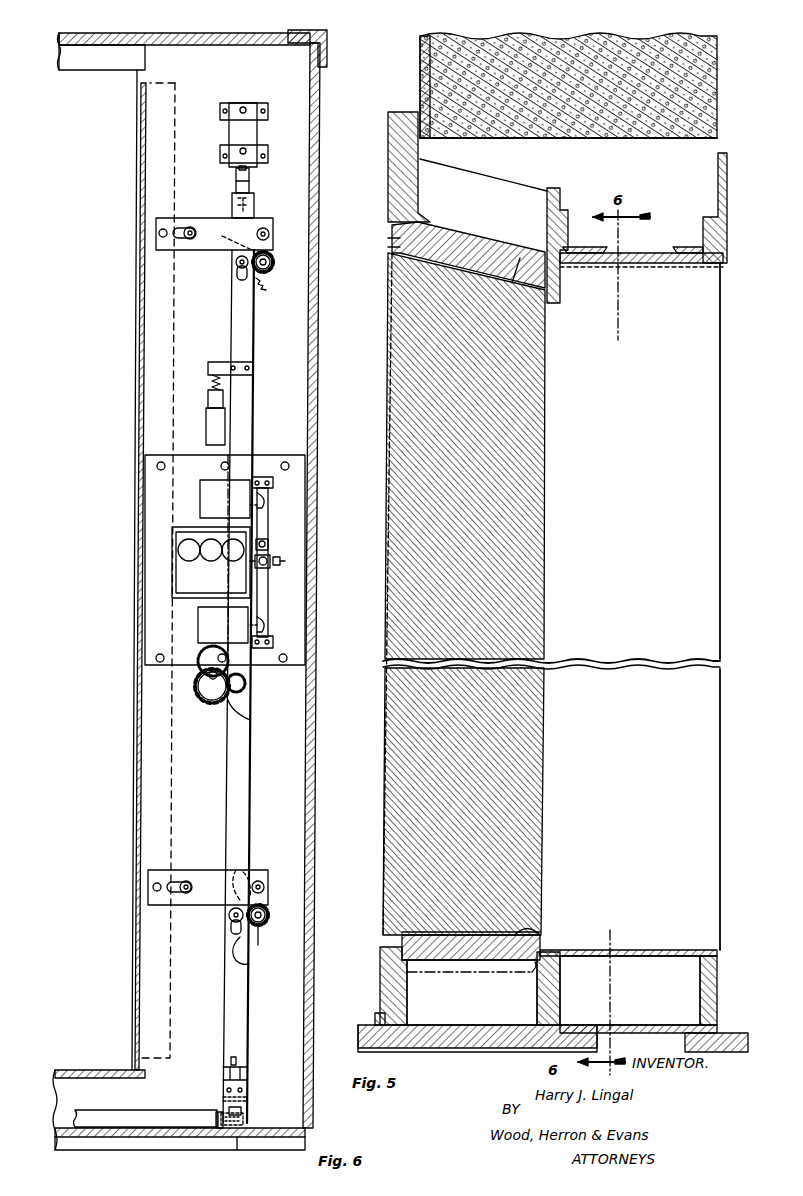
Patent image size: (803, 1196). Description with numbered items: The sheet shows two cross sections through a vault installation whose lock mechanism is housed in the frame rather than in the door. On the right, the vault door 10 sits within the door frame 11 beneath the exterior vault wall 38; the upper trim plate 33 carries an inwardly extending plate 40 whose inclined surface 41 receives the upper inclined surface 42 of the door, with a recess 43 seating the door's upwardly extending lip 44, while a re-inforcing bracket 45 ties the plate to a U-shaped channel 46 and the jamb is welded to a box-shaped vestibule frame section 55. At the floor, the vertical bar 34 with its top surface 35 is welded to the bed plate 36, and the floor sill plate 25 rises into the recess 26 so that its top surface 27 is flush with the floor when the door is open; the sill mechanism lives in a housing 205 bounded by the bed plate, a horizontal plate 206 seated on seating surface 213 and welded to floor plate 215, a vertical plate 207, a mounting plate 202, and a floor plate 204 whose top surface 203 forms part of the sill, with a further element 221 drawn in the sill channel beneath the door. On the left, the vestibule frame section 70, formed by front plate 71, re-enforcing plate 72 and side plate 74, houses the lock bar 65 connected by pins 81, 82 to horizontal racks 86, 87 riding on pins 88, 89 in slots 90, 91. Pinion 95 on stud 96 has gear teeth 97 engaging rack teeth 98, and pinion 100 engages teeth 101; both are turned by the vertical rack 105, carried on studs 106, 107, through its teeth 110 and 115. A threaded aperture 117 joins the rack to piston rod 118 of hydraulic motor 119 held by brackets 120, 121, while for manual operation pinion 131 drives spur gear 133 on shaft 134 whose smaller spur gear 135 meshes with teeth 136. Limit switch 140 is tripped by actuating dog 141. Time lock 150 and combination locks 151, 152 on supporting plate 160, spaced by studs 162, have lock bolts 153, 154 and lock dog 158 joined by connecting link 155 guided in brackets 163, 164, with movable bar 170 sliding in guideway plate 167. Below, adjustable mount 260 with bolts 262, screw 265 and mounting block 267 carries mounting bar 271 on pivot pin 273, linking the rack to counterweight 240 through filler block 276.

In FIG. 5, the vault door 10 is at (527, 523).
In FIG. 5, the door frame 11 is at (497, 186).
In FIG. 5, the floor sill plate 25 is at (527, 948).
In FIG. 5, the recess 26 is at (540, 930).
In FIG. 5, the top surface 27 is at (415, 935).
In FIG. 5, the architrave trim plate 33 is at (407, 147).
In FIG. 5, the vertical bar 34 is at (383, 992).
In FIG. 5, the top surface 35 is at (386, 952).
In FIG. 5, the bed plate 36 is at (452, 1036).
In FIG. 5, the exterior vault wall 38 is at (455, 83).
In FIG. 5, the inwardly extending plate 40 is at (473, 249).
In FIG. 5, the inclined surface 41 is at (521, 254).
In FIG. 5, the upper inclined surface 42 is at (548, 310).
In FIG. 5, the recess 43 is at (392, 242).
In FIG. 5, the upwardly extending lip 44 is at (392, 254).
In FIG. 5, the re-inforcing bracket 45 is at (553, 200).
In FIG. 5, the U-shaped channel 46 is at (649, 256).
In FIG. 5, the vestibule frame section 55 is at (680, 268).
In FIG. 6, the lock bar 65 is at (172, 80).
In FIG. 6, the vestibule frame section 70 is at (131, 392).
In FIG. 6, the front plate 71 is at (158, 317).
In FIG. 6, the re-enforcing plate 72 is at (312, 410).
In FIG. 6, the side plate 74 is at (144, 357).
In FIG. 6, the rearwardly extending pin 81 is at (153, 888).
In FIG. 6, the rearwardly extending pin 82 is at (163, 240).
In FIG. 6, the rack 86 is at (205, 905).
In FIG. 6, the rack 87 is at (214, 250).
In FIG. 6, the horizontal pin 88 is at (189, 880).
In FIG. 6, the horizontal pin 89 is at (266, 882).
In FIG. 6, the elongated slot 90 is at (175, 883).
In FIG. 6, the elongated slot 91 is at (250, 868).
In FIG. 6, the pinion 95 is at (271, 914).
In FIG. 6, the stud 96 is at (270, 919).
In FIG. 6, the gear teeth 97 is at (268, 943).
In FIG. 6, the teeth 98 is at (238, 868).
In FIG. 6, the pinion 100 is at (275, 262).
In FIG. 6, the teeth 101 is at (220, 236).
In FIG. 6, the vertical rack 105 is at (248, 326).
In FIG. 6, the stud 106 is at (238, 268).
In FIG. 6, the stud 107 is at (228, 924).
In FIG. 6, the gear teeth 110 is at (259, 958).
In FIG. 6, the teeth 115 is at (266, 288).
In FIG. 6, the threaded aperture 117 is at (255, 205).
In FIG. 6, the piston rod 118 is at (250, 181).
In FIG. 6, the reciprocal hydraulic motor 119 is at (257, 135).
In FIG. 6, the bracket 120 is at (269, 156).
In FIG. 6, the bracket 121 is at (268, 110).
In FIG. 6, the pinion 131 is at (246, 683).
In FIG. 6, the spur gear 133 is at (214, 706).
In FIG. 6, the shaft 134 is at (209, 676).
In FIG. 6, the spur gear 135 is at (199, 694).
In FIG. 6, the teeth 136 is at (253, 714).
In FIG. 6, the limit switch 140 is at (210, 434).
In FIG. 6, the actuating dog 141 is at (218, 364).
In FIG. 6, the time lock 150 is at (185, 580).
In FIG. 6, the combination lock 151 is at (200, 511).
In FIG. 6, the combination lock 152 is at (205, 620).
In FIG. 6, the lock bolt 153 is at (266, 506).
In FIG. 6, the lock bolt 154 is at (265, 625).
In FIG. 6, the connecting link 155 is at (268, 588).
In FIG. 6, the lock dog 158 is at (268, 545).
In FIG. 6, the supporting plate 160 is at (152, 507).
In FIG. 6, the stud 162 is at (156, 467).
In FIG. 6, the guideway bracket 163 is at (270, 645).
In FIG. 6, the guideway bracket 164 is at (273, 483).
In FIG. 6, the guideway plate 167 is at (176, 546).
In FIG. 6, the movable bar 170 is at (285, 561).
In FIG. 5, the mounting plate 202 is at (555, 988).
In FIG. 5, the top surface 203 is at (636, 949).
In FIG. 5, the floor plate 204 is at (630, 990).
In FIG. 6, the housing 205 is at (72, 1096).
In FIG. 5, the housing 205 is at (683, 1002).
In FIG. 6, the horizontal plate 206 is at (55, 1134).
In FIG. 5, the horizontal plate 206 is at (645, 1031).
In FIG. 5, the vertical plate 207 is at (712, 972).
In FIG. 5, the seating surface 213 is at (577, 1032).
In FIG. 6, the floor plate 215 is at (98, 1143).
In FIG. 5, the floor plate 215 is at (728, 1041).
In FIG. 5, the shaft 221 is at (531, 976).
In FIG. 6, the counterweight 240 is at (112, 1122).
In FIG. 6, the vertically adjustable mount 260 is at (250, 1106).
In FIG. 6, the bolt 262 is at (226, 1090).
In FIG. 6, the screw 265 is at (238, 1060).
In FIG. 6, the mounting block 267 is at (247, 1072).
In FIG. 6, the mounting bar 271 is at (238, 1132).
In FIG. 6, the pivot pin 273 is at (248, 1119).
In FIG. 6, the filler block 276 is at (221, 1132).